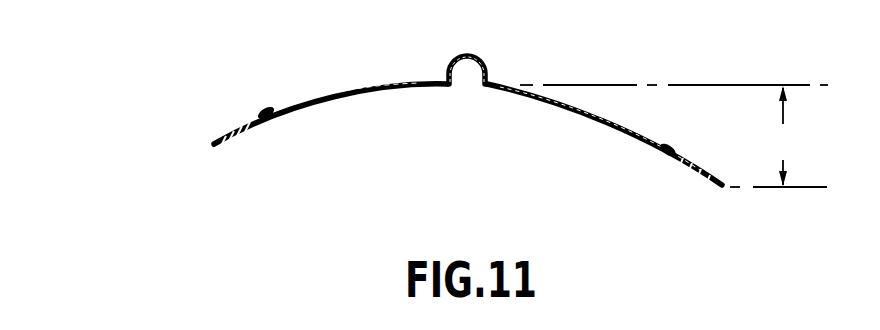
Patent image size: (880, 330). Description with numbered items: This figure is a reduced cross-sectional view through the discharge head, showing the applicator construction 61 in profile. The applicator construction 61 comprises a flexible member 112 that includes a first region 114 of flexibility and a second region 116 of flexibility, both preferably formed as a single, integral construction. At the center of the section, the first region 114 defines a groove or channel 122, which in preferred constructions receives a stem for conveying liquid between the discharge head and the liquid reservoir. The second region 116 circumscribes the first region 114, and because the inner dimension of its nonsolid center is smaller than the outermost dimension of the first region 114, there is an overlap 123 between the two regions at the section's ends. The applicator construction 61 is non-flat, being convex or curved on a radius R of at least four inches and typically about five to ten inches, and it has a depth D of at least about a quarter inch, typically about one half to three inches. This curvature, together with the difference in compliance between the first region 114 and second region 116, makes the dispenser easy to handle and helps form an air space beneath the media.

The applicator construction 61 is at (372, 114).
The first region 114 is at (330, 95).
The channel 122 is at (487, 78).
The overlap 123 is at (235, 126).
The second region 116 is at (690, 155).
The flexible member 112 is at (666, 71).
The radius R is at (506, 136).
The depth D is at (778, 136).